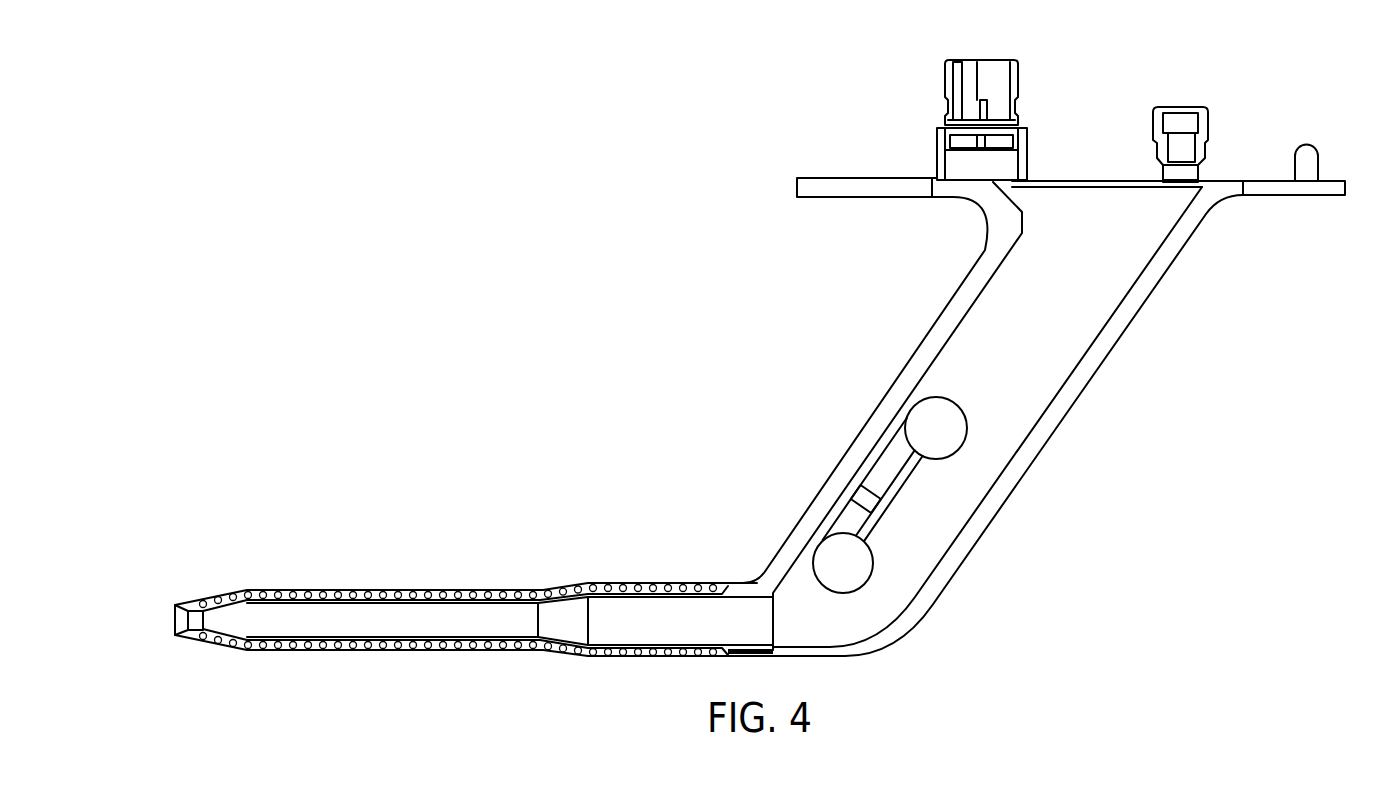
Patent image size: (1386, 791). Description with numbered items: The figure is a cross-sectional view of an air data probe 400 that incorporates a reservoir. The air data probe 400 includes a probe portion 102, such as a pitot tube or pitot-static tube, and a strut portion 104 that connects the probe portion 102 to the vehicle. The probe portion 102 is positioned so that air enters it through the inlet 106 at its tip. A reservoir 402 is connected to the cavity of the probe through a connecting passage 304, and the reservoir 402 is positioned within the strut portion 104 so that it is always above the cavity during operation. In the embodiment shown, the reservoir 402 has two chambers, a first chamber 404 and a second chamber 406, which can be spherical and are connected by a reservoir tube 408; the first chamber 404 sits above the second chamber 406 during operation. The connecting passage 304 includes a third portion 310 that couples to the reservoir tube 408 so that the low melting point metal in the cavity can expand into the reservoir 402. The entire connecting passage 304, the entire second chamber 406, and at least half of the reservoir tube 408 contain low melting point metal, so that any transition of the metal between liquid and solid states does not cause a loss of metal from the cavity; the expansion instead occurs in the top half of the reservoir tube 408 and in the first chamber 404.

The air data probe 400 is at (414, 333).
The probe portion 102 is at (383, 590).
The strut portion 104 is at (935, 322).
The inlet 106 is at (175, 622).
The connecting passage 304 is at (818, 527).
The third portion 310 is at (858, 486).
The reservoir 402 is at (963, 391).
The first chamber 404 is at (912, 410).
The second chamber 406 is at (813, 563).
The reservoir tube 408 is at (902, 463).